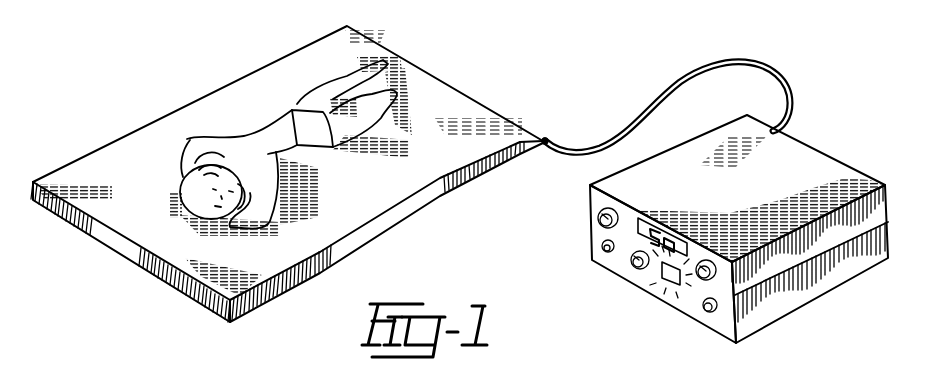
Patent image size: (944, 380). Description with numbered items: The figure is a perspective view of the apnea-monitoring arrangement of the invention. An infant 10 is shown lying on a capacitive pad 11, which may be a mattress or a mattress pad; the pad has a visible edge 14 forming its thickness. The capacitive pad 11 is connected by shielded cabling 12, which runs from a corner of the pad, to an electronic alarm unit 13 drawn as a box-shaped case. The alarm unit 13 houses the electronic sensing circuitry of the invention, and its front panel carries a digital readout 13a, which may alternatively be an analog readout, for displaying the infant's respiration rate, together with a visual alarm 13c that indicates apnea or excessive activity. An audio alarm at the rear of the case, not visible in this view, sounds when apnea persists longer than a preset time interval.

The infant 10 is at (195, 147).
The capacitive pad 11 is at (447, 95).
The shielded cabling 12 is at (708, 72).
The electronic alarm unit 13 is at (792, 150).
The digital readout 13a is at (637, 238).
The visual alarm 13c is at (672, 274).
The platform edge 14 is at (420, 204).